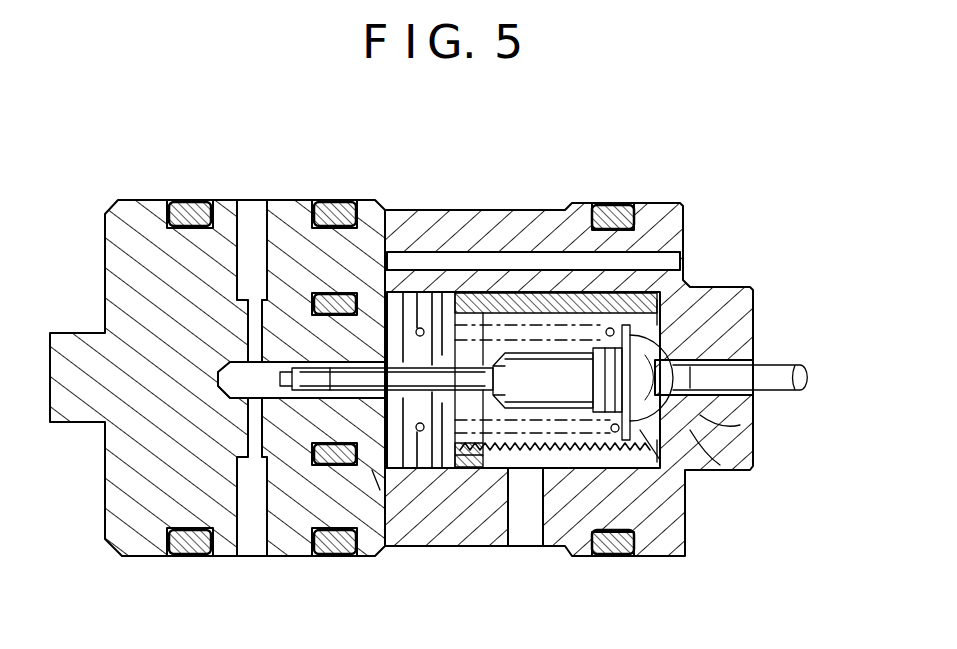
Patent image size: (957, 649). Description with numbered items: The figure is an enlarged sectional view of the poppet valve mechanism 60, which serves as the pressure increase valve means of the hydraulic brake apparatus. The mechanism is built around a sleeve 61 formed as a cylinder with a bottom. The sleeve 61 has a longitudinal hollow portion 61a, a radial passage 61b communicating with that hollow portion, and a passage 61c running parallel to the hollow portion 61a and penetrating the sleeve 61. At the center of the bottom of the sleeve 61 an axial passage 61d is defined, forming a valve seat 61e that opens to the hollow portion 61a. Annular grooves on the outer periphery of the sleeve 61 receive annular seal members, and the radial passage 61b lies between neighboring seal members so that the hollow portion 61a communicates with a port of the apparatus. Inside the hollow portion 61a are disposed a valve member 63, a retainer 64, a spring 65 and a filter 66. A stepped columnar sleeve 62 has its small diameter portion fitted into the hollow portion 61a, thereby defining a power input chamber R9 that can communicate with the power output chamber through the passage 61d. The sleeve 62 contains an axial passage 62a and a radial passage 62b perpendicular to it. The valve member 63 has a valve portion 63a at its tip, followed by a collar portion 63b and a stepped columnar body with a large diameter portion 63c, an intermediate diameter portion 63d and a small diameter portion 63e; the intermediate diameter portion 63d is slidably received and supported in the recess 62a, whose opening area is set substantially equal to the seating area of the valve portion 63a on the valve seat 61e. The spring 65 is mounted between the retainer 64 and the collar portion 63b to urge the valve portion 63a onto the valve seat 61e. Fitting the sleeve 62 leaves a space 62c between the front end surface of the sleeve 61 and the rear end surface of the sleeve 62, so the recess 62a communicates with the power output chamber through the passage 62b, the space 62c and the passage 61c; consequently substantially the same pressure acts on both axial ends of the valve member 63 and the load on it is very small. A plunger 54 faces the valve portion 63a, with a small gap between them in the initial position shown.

The poppet valve mechanism 60 is at (687, 185).
The sleeve 61 is at (415, 527).
The longitudinal hollow portion 61a is at (472, 542).
The radial passage 61b is at (527, 542).
The passage 61c is at (688, 258).
The axial passage 61d is at (675, 402).
The valve seat 61e is at (678, 412).
The stepped columnar sleeve 62 is at (150, 525).
The axial passage 62a is at (235, 362).
The radial passage 62b is at (257, 552).
The space 62c is at (252, 235).
The valve member 63 is at (596, 340).
The valve portion 63a is at (665, 337).
The collar portion 63b is at (613, 413).
The large diameter portion 63c is at (545, 325).
The intermediate diameter portion 63d is at (453, 320).
The small diameter portion 63e is at (340, 296).
The retainer 64 is at (437, 368).
The spring 65 is at (372, 490).
The filter 66 is at (600, 465).
The power input chamber R9 is at (497, 350).
The plunger 54 is at (778, 374).